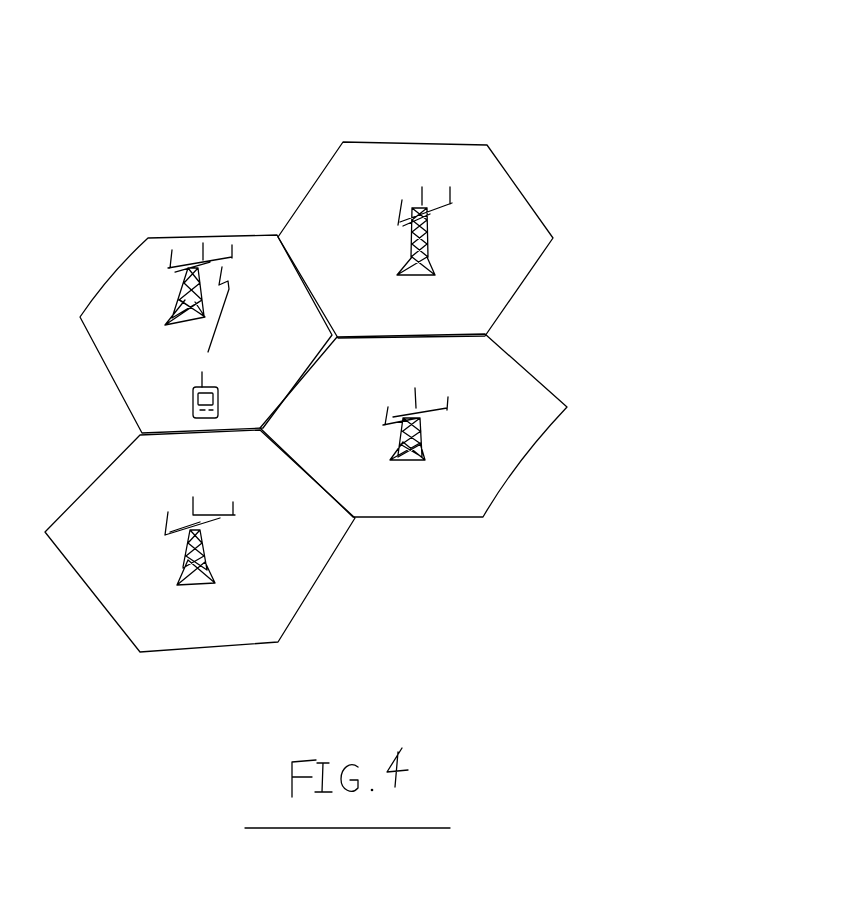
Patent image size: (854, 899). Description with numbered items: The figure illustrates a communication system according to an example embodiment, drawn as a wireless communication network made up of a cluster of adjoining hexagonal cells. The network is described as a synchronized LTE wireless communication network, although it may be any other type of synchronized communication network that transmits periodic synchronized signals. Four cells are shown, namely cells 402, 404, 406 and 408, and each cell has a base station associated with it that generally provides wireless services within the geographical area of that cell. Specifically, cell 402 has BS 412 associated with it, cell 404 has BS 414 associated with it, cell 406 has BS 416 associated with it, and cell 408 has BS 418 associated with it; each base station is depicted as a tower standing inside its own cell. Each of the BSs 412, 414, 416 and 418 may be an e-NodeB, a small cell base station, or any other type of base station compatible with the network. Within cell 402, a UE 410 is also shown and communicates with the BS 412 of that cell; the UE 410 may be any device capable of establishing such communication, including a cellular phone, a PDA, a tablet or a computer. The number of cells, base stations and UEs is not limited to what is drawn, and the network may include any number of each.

The cell 402 is at (98, 351).
The cell 404 is at (523, 230).
The cell 406 is at (527, 437).
The cell 408 is at (283, 610).
The UE 410 is at (220, 393).
The BS 412 is at (185, 282).
The BS 414 is at (430, 243).
The BS 416 is at (422, 442).
The BS 418 is at (206, 556).